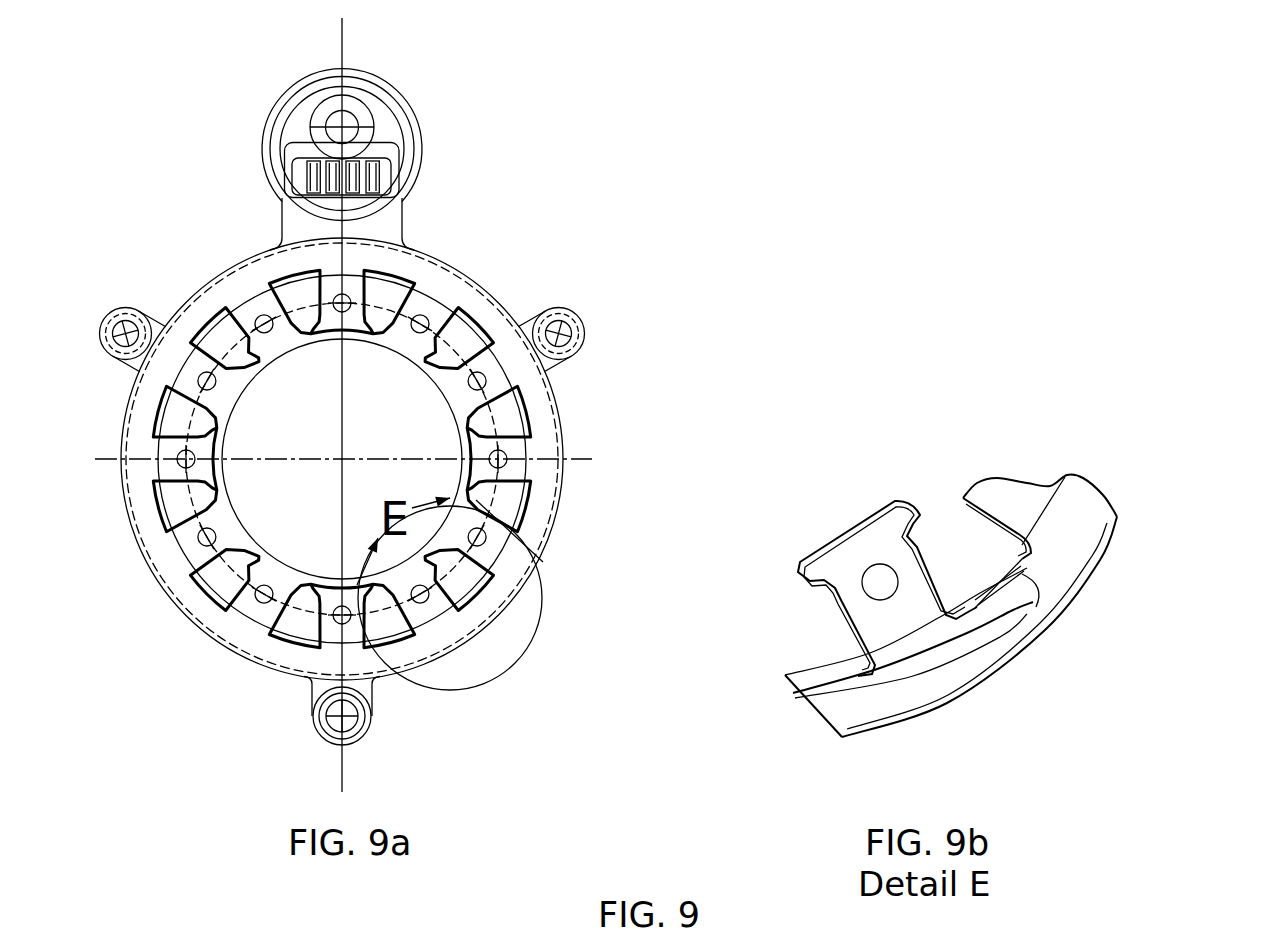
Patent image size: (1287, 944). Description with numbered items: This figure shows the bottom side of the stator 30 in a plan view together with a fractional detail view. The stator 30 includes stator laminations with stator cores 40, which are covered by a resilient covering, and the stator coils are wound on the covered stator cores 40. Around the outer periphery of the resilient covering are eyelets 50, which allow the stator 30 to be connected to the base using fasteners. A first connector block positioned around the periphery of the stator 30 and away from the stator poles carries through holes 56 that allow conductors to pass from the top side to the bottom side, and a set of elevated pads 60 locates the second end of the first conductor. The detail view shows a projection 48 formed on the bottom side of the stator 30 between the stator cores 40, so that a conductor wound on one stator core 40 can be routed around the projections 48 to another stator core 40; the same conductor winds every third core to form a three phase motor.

In FIG. 9a, the stator 30 is at (568, 233).
In FIG. 9a, the eyelets 50 is at (585, 320).
In FIG. 9a, the through holes 56 is at (371, 166).
In FIG. 9a, the elevated pads 60 is at (372, 181).
In FIG. 9b, the stator cores 40 is at (993, 498).
In FIG. 9b, the projections 48 is at (1036, 607).